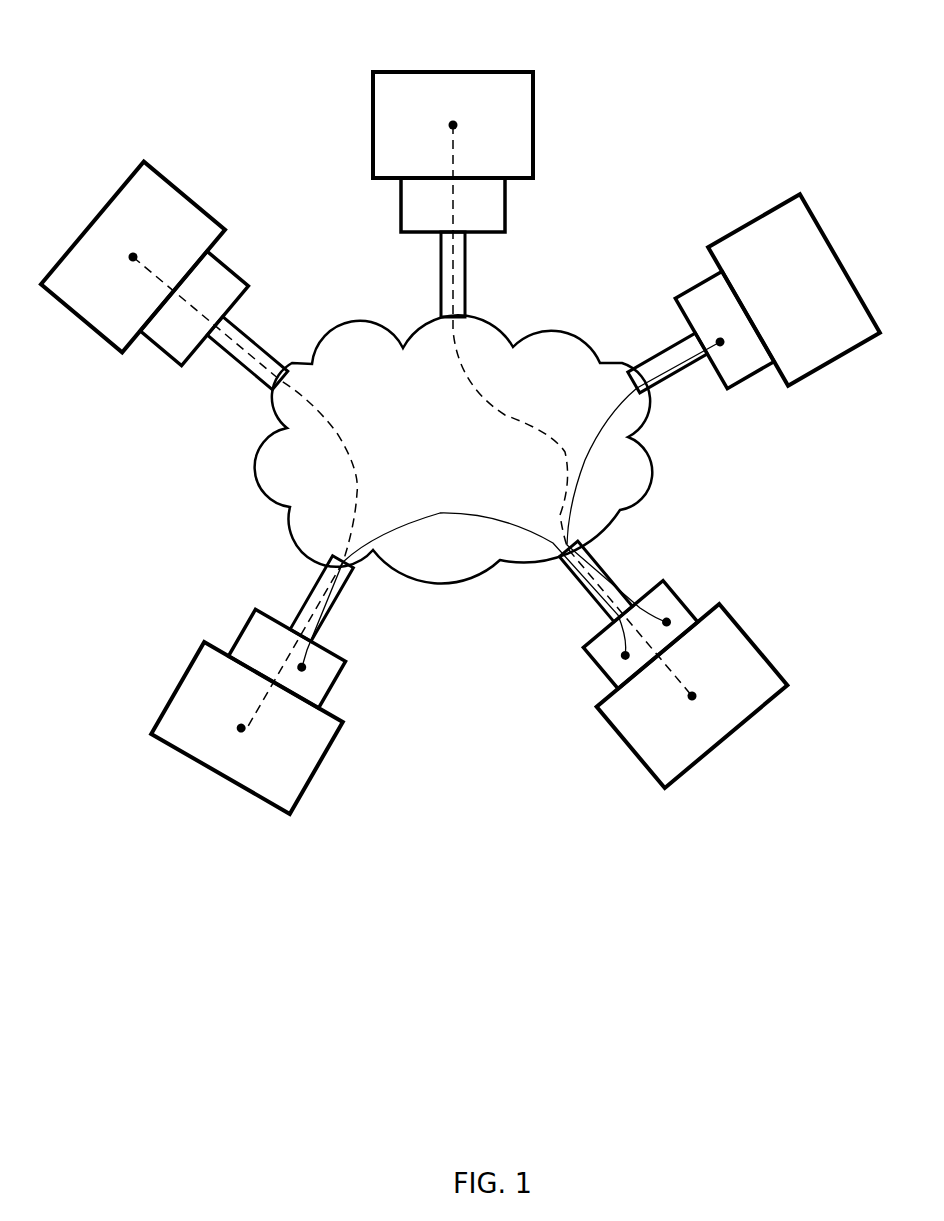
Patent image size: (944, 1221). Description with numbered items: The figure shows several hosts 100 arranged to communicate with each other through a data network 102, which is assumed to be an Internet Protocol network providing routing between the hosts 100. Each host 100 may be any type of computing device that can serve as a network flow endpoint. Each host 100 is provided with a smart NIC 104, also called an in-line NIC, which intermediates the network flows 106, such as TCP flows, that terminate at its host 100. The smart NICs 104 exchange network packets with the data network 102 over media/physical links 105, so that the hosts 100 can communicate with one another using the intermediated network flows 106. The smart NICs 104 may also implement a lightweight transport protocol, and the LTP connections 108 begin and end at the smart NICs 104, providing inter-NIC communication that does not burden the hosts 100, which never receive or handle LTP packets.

The host 100 is at (447, 90).
The data network 102 is at (270, 467).
The smart NIC 104 is at (225, 285).
The media/physical link 105 is at (663, 355).
The network flow 106 is at (263, 347).
The LTP connection 108 is at (540, 533).